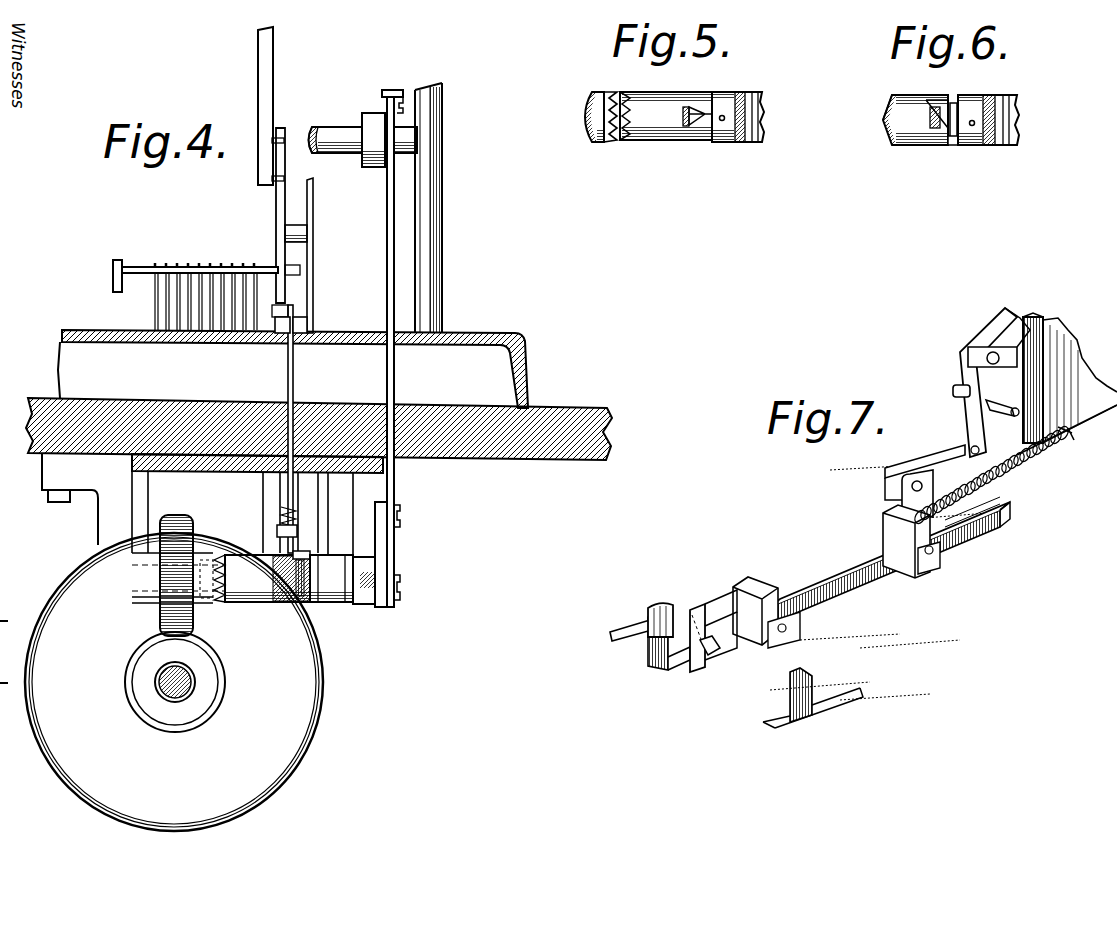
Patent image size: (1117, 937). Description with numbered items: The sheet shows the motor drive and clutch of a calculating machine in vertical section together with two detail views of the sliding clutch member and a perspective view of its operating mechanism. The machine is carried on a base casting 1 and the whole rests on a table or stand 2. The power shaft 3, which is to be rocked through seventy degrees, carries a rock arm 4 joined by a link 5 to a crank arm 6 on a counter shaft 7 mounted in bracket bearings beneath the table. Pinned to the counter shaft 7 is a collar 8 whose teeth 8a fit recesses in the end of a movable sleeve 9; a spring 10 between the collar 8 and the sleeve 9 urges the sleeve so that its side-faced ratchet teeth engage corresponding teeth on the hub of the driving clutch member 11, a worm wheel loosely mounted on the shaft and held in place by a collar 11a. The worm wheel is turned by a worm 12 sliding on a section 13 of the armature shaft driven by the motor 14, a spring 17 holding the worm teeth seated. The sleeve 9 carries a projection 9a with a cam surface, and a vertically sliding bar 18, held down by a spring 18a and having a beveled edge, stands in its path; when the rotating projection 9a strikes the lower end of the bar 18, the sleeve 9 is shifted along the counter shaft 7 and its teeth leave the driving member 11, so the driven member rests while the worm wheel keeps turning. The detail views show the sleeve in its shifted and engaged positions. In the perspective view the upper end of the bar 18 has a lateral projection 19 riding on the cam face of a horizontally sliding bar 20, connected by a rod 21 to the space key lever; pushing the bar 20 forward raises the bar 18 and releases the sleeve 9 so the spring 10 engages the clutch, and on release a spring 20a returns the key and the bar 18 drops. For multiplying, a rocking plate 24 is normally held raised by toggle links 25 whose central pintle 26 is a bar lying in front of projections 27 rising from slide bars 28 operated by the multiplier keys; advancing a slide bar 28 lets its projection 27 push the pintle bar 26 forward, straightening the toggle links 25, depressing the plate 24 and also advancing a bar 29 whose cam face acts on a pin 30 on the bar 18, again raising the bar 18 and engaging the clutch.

In FIG. 4, the base casting 1 is at (500, 360).
In FIG. 7, the base casting 1 is at (943, 506).
In FIG. 4, the table or stand 2 is at (508, 461).
In FIG. 4, the power shaft 3 is at (330, 135).
In FIG. 4, the rock arm 4 is at (388, 92).
In FIG. 4, the link 5 is at (387, 246).
In FIG. 7, the link 5 is at (818, 703).
In FIG. 4, the crank arm 6 is at (392, 531).
In FIG. 4, the counter shaft 7 is at (355, 608).
In FIG. 5, the counter shaft 7 is at (590, 122).
In FIG. 6, the counter shaft 7 is at (884, 124).
In FIG. 4, the collar 8 is at (328, 606).
In FIG. 5, the collar 8 is at (722, 143).
In FIG. 6, the collar 8 is at (982, 146).
In FIG. 4, the teeth 8a is at (297, 608).
In FIG. 6, the teeth 8a is at (955, 146).
In FIG. 4, the movable sleeve 9 is at (262, 578).
In FIG. 5, the movable sleeve 9 is at (666, 116).
In FIG. 6, the movable sleeve 9 is at (892, 146).
In FIG. 4, the projection 9a is at (312, 553).
In FIG. 5, the projection 9a is at (697, 110).
In FIG. 6, the projection 9a is at (954, 104).
In FIG. 4, the spring 10 is at (268, 602).
In FIG. 6, the spring 10 is at (985, 97).
In FIG. 4, the driving member of the clutch 11 is at (160, 616).
In FIG. 5, the driving member of the clutch 11 is at (604, 96).
In FIG. 4, the collar 11a is at (208, 560).
In FIG. 4, the worm 12 is at (194, 702).
In FIG. 4, the section of armature shaft 13 is at (172, 683).
In FIG. 4, the motor 14 is at (174, 682).
In FIG. 4, the spring 17 is at (193, 679).
In FIG. 4, the bar 18 is at (293, 372).
In FIG. 5, the bar 18 is at (685, 125).
In FIG. 6, the bar 18 is at (930, 118).
In FIG. 7, the bar 18 is at (705, 606).
In FIG. 4, the spring 18a is at (280, 510).
In FIG. 4, the lateral projection 19 is at (273, 311).
In FIG. 7, the lateral projection 19 is at (666, 626).
In FIG. 4, the horizontally sliding bar 20 is at (270, 341).
In FIG. 7, the horizontally sliding bar 20 is at (828, 566).
In FIG. 7, the spring 20a is at (1048, 452).
In FIG. 7, the rod 21 is at (615, 632).
In FIG. 7, the rocking plate 24 is at (945, 448).
In FIG. 4, the toggle links 25 is at (276, 263).
In FIG. 7, the toggle links 25 is at (995, 380).
In FIG. 4, the central pintle 26 is at (135, 266).
In FIG. 7, the central pintle 26 is at (955, 391).
In FIG. 4, the projections 27 is at (170, 291).
In FIG. 4, the slide bars 28 is at (190, 315).
In FIG. 4, the bar 29 is at (305, 326).
In FIG. 7, the bar 29 is at (978, 517).
In FIG. 4, the pin 30 is at (300, 318).
In FIG. 7, the pin 30 is at (712, 657).